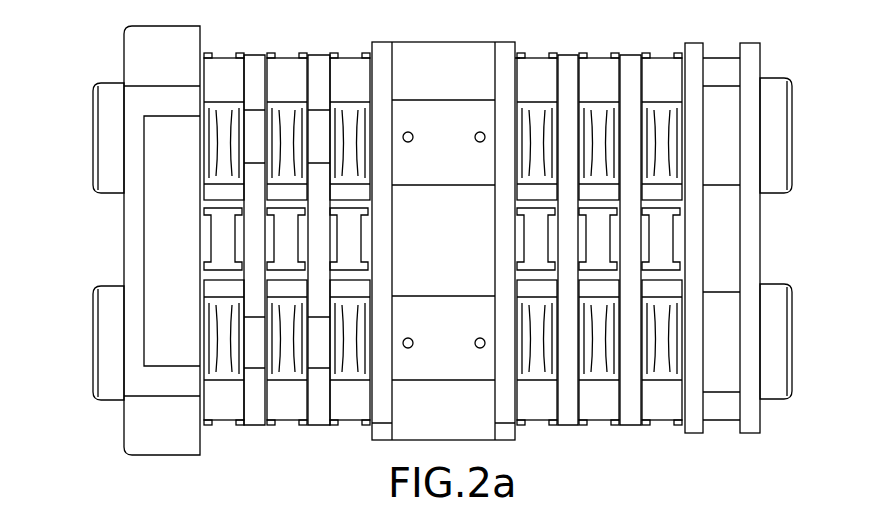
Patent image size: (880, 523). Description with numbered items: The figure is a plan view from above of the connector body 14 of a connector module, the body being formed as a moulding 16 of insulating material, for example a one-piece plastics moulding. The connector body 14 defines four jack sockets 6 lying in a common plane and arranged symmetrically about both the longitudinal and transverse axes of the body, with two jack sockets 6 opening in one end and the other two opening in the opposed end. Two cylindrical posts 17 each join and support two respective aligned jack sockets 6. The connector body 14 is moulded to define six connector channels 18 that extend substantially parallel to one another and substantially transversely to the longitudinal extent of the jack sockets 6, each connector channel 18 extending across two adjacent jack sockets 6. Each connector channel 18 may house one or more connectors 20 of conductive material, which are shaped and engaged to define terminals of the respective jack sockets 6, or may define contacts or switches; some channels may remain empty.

The jack socket 6 is at (93, 137).
The connector body 14 is at (590, 432).
The moulding 16 is at (690, 433).
The cylindrical post 17 is at (445, 100).
The connector channel 18 is at (290, 432).
The connector 20 is at (226, 370).